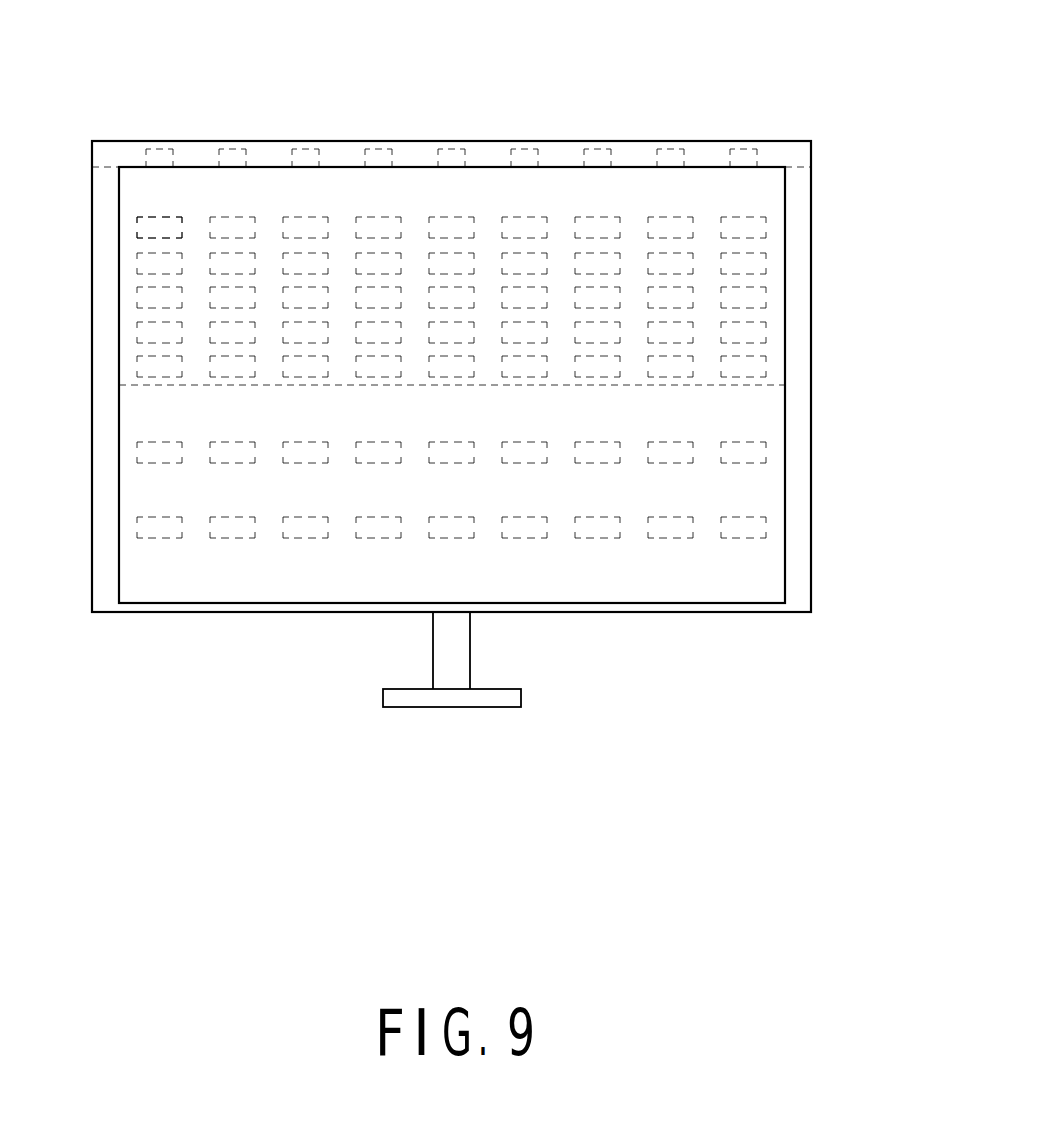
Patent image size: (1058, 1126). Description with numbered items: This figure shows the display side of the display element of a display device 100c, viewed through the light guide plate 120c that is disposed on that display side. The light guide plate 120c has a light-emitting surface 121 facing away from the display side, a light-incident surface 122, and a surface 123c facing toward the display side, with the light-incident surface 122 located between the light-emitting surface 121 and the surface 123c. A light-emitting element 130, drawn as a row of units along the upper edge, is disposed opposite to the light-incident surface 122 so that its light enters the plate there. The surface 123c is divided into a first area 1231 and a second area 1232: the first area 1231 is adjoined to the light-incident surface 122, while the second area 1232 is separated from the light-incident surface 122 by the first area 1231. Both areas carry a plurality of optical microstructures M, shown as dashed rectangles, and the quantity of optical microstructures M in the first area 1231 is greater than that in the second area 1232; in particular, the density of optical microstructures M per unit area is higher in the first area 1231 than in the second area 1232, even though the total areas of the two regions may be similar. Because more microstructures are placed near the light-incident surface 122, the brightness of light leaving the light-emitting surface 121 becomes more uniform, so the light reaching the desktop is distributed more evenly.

The display device 100c is at (102, 47).
The light guide plate 120c is at (563, 192).
The light-emitting surface 121 is at (573, 568).
The light-incident surface 122 is at (713, 167).
The surface 123c is at (889, 345).
The first area 1231 is at (785, 340).
The second area 1232 is at (785, 475).
The light-emitting element 130 is at (234, 155).
The optical microstructures M is at (137, 220).